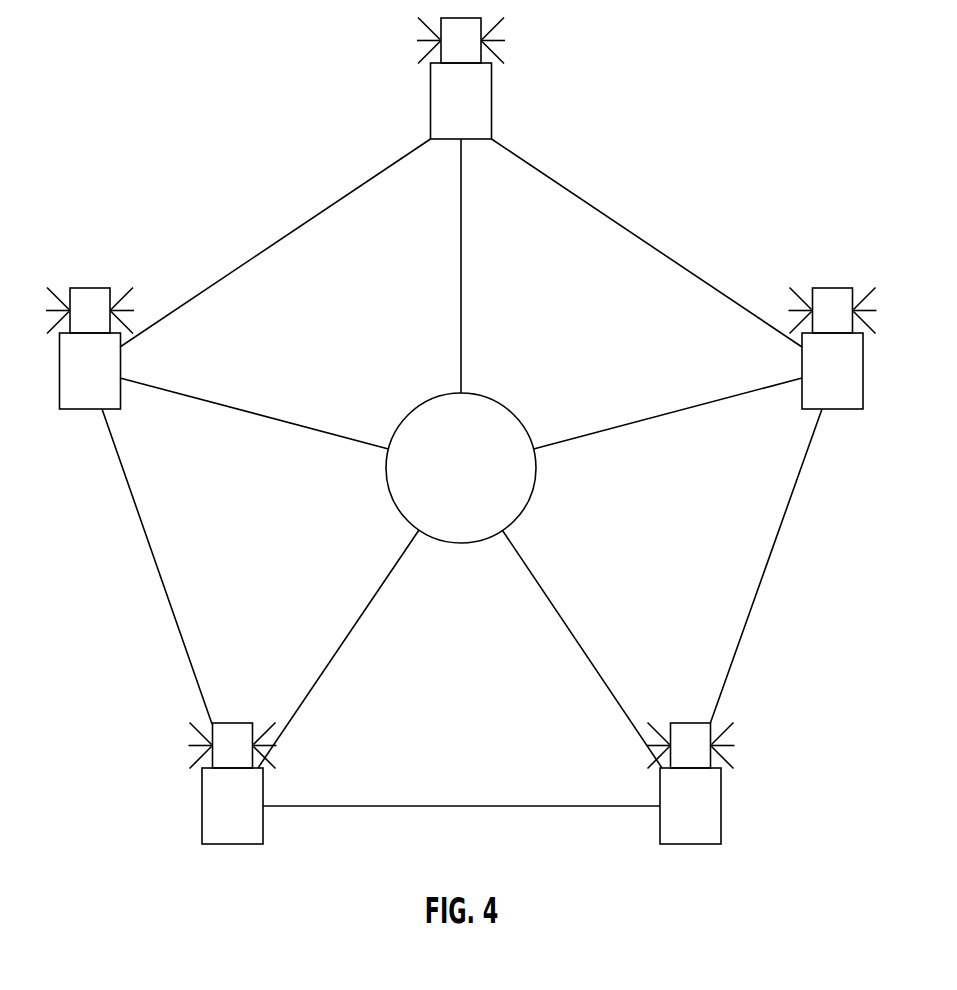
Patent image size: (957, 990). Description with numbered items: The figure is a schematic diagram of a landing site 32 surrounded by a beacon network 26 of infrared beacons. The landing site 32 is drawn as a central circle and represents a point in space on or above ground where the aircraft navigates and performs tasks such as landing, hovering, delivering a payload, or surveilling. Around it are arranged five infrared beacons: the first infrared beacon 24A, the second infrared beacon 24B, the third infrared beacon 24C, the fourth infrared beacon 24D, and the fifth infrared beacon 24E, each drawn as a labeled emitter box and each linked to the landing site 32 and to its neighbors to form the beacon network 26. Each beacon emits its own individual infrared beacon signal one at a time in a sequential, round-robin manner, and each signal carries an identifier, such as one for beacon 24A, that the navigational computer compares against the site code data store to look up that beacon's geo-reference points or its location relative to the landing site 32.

The first infrared beacon 24A is at (75, 409).
The second infrared beacon 24B is at (492, 100).
The third infrared beacon 24C is at (842, 409).
The fourth infrared beacon 24D is at (721, 805).
The fifth infrared beacon 24E is at (202, 805).
The landing site 32 is at (513, 413).
The beacon network 26 is at (822, 587).